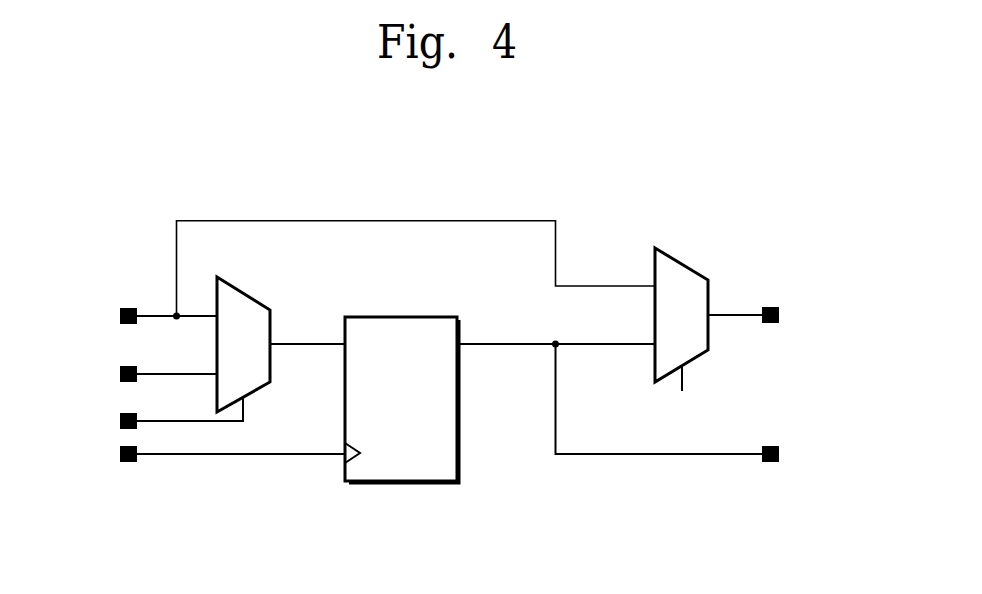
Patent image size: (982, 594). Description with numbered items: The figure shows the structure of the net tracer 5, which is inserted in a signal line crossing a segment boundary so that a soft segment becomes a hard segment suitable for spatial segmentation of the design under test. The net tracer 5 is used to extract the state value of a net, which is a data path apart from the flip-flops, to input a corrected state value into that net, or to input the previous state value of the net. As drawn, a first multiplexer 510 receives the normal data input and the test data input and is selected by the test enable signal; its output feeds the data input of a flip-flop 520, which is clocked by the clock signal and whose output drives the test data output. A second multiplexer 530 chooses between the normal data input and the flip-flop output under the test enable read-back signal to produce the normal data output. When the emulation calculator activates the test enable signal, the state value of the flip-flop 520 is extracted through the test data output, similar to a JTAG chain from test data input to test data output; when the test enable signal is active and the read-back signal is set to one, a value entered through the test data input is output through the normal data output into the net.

The net tracer 5 is at (769, 174).
The first multiplexer 510 is at (243, 349).
The flip-flop 520 is at (402, 400).
The second multiplexer 530 is at (681, 315).